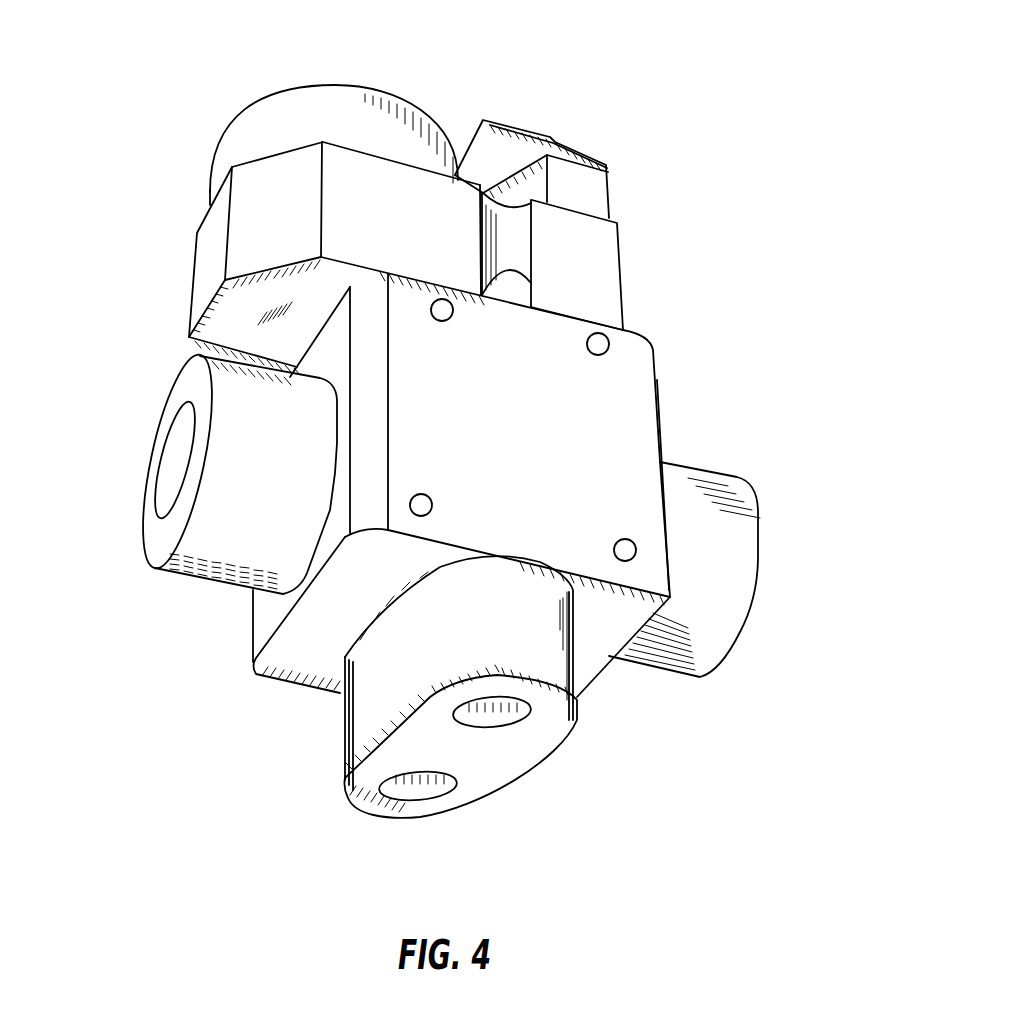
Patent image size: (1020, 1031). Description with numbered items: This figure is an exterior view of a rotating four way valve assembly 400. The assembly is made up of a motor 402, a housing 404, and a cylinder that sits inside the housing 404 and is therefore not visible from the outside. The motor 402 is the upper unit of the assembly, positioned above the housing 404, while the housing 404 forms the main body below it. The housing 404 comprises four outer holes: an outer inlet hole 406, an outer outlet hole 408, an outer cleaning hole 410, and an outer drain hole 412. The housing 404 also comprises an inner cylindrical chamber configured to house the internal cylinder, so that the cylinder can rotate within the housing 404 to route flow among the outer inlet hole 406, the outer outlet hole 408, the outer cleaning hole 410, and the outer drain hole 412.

The four way valve assembly 400 is at (153, 64).
The motor 402 is at (663, 128).
The housing 404 is at (825, 343).
The outer inlet hole 406 is at (167, 456).
The outer outlet hole 408 is at (770, 592).
The outer cleaning hole 410 is at (409, 808).
The outer drain hole 412 is at (504, 742).